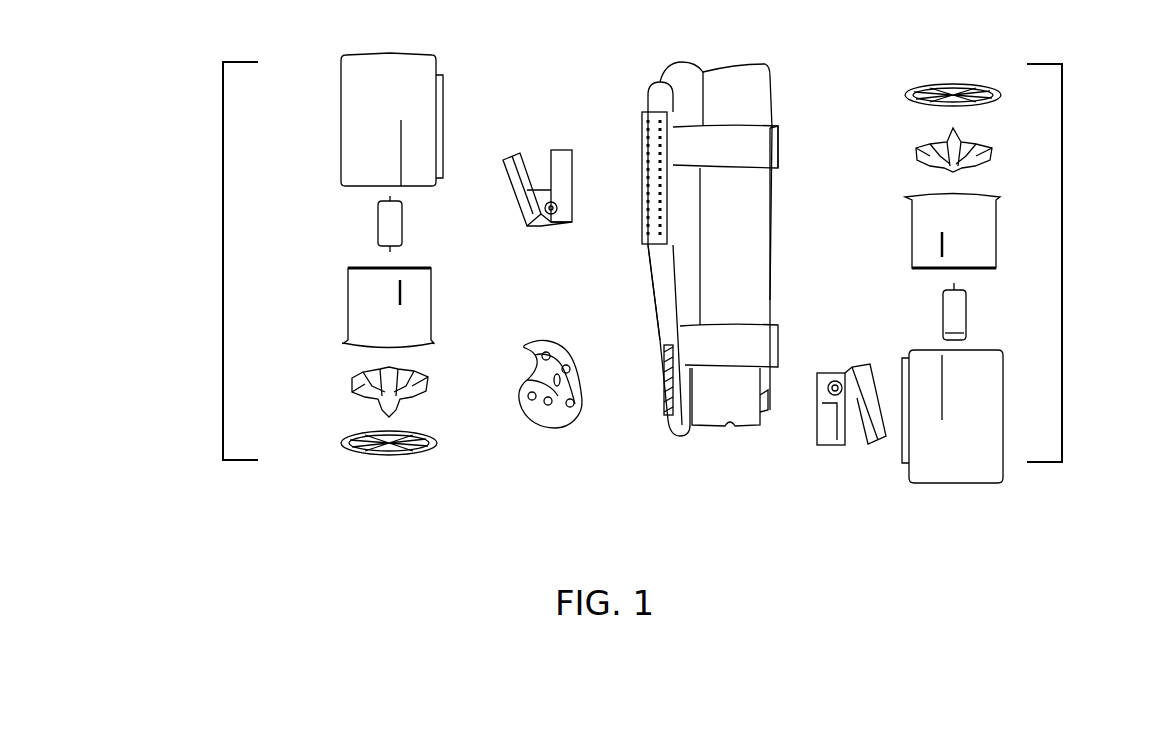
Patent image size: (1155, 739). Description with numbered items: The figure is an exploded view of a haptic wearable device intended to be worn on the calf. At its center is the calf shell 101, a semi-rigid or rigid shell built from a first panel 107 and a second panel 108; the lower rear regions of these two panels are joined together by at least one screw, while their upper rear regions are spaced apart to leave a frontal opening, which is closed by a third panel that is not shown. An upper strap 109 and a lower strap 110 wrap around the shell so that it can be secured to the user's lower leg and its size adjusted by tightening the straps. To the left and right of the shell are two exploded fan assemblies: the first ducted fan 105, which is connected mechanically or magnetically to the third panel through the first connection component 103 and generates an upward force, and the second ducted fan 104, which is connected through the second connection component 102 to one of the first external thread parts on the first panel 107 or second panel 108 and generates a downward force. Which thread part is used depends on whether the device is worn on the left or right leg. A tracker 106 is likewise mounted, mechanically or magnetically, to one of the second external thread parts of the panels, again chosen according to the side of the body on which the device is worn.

The calf shell 101 is at (713, 295).
The second connection component 102 is at (542, 173).
The first connection component 103 is at (848, 421).
The second ducted fan 104 is at (223, 241).
The first ducted fan 105 is at (1062, 249).
The tracker 106 is at (554, 437).
The first panel 107 is at (663, 255).
The second panel 108 is at (773, 218).
The upper strap 109 is at (694, 150).
The lower strap 110 is at (695, 348).